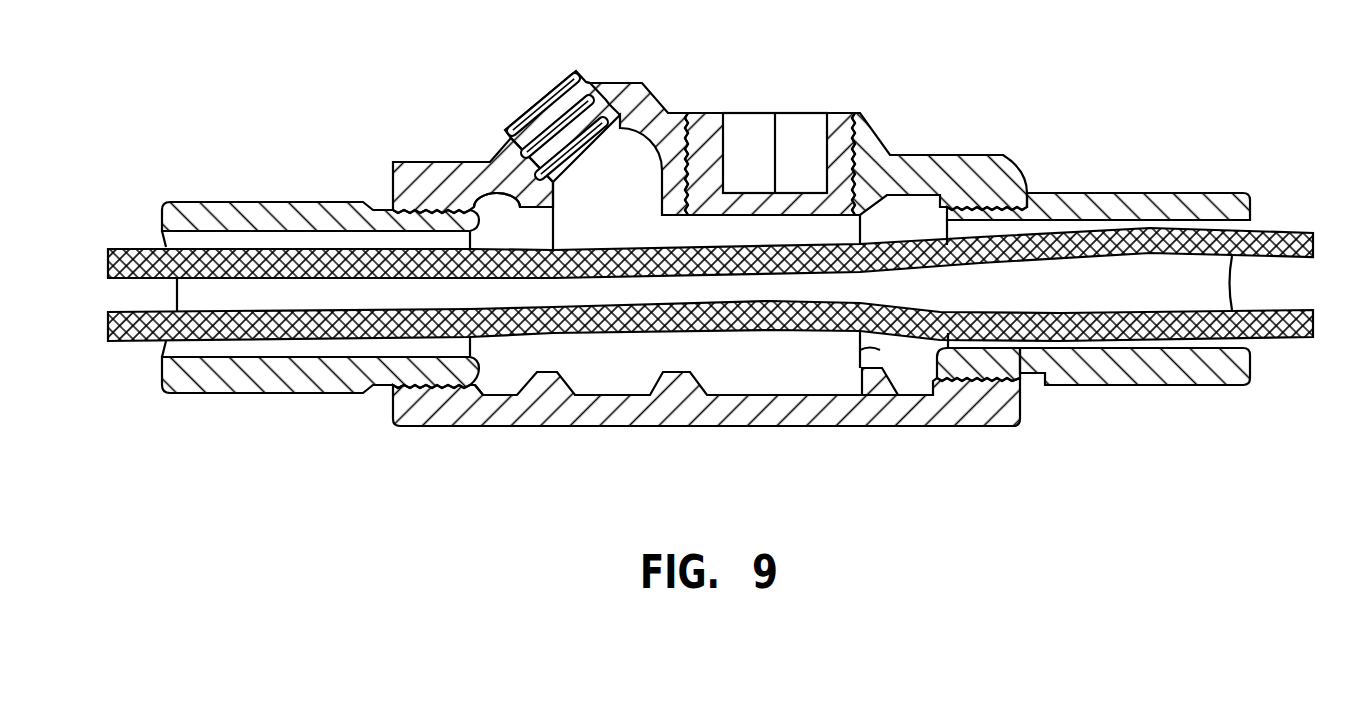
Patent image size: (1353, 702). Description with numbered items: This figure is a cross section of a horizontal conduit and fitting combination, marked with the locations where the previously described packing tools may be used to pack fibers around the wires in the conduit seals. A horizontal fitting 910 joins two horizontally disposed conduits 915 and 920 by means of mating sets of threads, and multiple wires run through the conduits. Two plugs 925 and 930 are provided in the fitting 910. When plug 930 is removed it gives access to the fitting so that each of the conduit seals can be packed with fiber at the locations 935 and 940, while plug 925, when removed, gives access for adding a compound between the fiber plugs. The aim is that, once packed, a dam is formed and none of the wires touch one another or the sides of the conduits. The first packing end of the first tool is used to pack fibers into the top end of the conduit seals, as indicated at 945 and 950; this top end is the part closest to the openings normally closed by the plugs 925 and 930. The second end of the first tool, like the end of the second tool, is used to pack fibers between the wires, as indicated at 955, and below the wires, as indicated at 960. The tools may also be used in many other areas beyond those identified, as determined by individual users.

The horizontal fitting 910 is at (702, 430).
The conduit 915 is at (1133, 192).
The conduit 920 is at (245, 395).
The plug 925 is at (538, 100).
The plug 930 is at (794, 111).
The conduit seal fiber packing location 935 is at (503, 375).
The conduit seal fiber packing location 940 is at (873, 352).
The top end packing location 945 is at (500, 230).
The top end packing location 950 is at (897, 213).
The between-wires packing location 955 is at (942, 290).
The below-wires packing location 960 is at (890, 357).